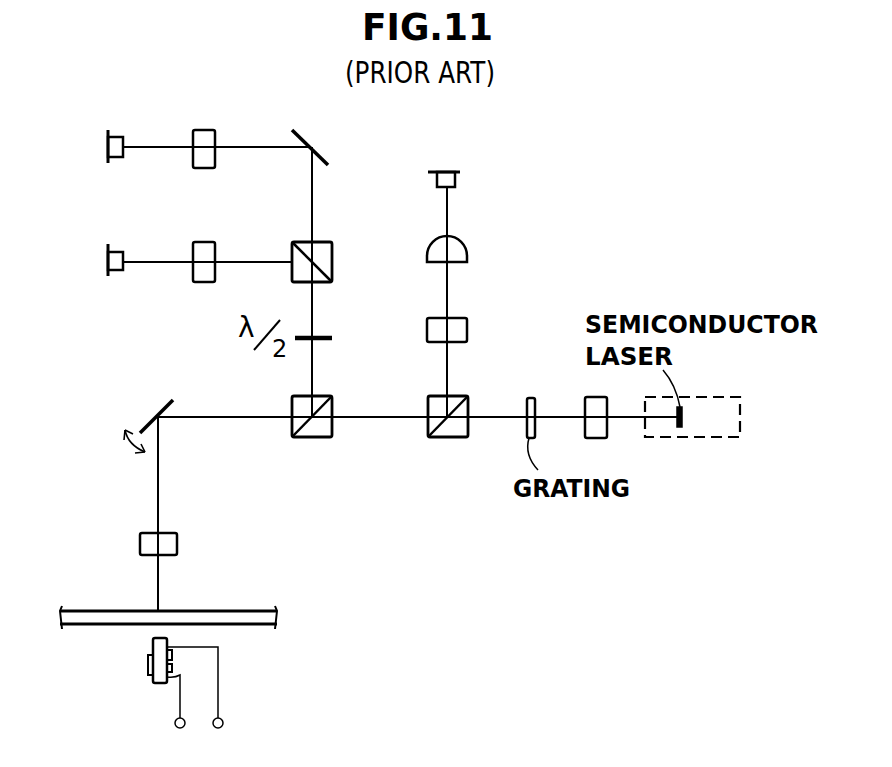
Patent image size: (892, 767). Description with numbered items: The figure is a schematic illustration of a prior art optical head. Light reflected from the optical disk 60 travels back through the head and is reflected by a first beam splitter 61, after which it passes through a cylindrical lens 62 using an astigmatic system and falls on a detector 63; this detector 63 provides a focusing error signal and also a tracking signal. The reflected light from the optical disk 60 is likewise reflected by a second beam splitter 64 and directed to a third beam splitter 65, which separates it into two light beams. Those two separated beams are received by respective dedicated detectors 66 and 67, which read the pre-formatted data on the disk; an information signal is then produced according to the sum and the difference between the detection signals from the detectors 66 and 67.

The optical disk 60 is at (240, 611).
The first beam splitter 61 is at (457, 394).
The cylindrical lens 62 is at (455, 253).
The detector 63 is at (458, 175).
The second beam splitter 64 is at (318, 394).
The third beam splitter 65 is at (332, 250).
The detector 66 is at (112, 252).
The detector 67 is at (112, 132).